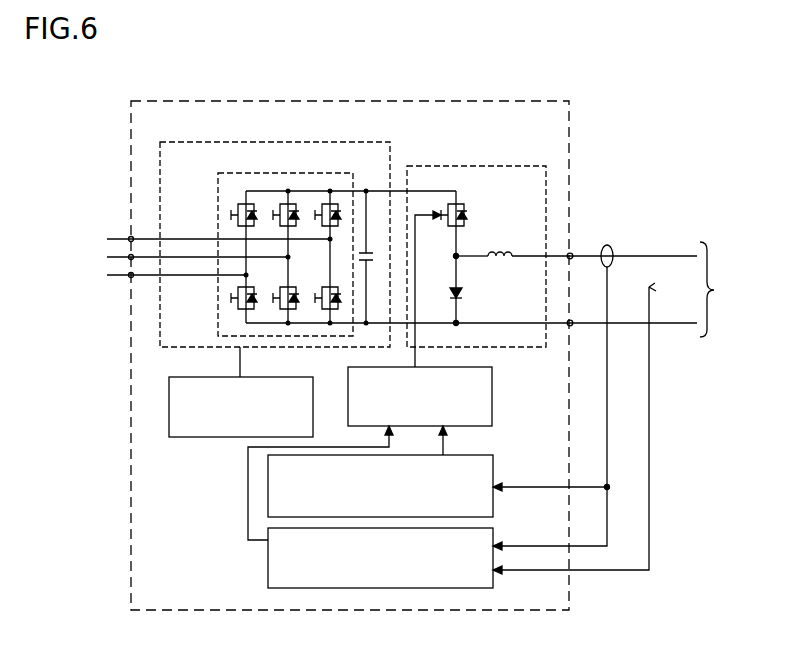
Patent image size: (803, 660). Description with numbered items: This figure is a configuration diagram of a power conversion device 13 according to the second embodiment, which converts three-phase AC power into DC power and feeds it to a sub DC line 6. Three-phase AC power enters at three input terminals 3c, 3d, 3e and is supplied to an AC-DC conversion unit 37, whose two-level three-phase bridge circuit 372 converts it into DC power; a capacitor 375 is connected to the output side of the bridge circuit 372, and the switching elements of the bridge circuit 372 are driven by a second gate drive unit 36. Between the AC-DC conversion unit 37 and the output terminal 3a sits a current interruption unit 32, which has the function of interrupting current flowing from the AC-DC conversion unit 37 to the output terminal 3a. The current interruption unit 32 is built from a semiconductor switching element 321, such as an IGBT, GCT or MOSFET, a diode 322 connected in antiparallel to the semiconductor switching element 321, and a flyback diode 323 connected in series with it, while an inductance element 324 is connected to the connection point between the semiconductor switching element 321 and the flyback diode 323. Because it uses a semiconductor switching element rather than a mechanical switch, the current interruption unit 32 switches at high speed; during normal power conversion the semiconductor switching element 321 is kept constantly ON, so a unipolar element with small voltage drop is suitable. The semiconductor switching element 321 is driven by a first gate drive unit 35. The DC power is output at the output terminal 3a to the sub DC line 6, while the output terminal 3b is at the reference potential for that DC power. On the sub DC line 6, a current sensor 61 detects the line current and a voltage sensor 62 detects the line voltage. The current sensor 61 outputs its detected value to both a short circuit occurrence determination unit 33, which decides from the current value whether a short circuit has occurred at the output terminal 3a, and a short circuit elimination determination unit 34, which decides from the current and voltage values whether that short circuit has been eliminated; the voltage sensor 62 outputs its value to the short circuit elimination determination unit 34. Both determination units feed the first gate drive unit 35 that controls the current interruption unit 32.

The power conversion device 13 is at (375, 101).
The AC-DC conversion unit 37 is at (268, 142).
The two-level three-phase bridge circuit 372 is at (218, 185).
The capacitor 375 is at (371, 248).
The current interruption unit 32 is at (479, 166).
The diode 322 is at (470, 207).
The semiconductor switching element 321 is at (444, 232).
The flyback diode 323 is at (462, 292).
The inductance element 324 is at (498, 247).
The output terminal 3a is at (574, 262).
The output terminal 3b is at (574, 328).
The input terminal 3c is at (130, 238).
The input terminal 3d is at (130, 257).
The input terminal 3e is at (130, 276).
The current sensor 61 is at (607, 245).
The voltage sensor 62 is at (654, 276).
The sub DC line 6 is at (721, 289).
The second gate drive unit 36 is at (169, 396).
The first gate drive unit 35 is at (348, 385).
The short circuit occurrence determination unit 33 is at (493, 458).
The short circuit elimination determination unit 34 is at (268, 571).